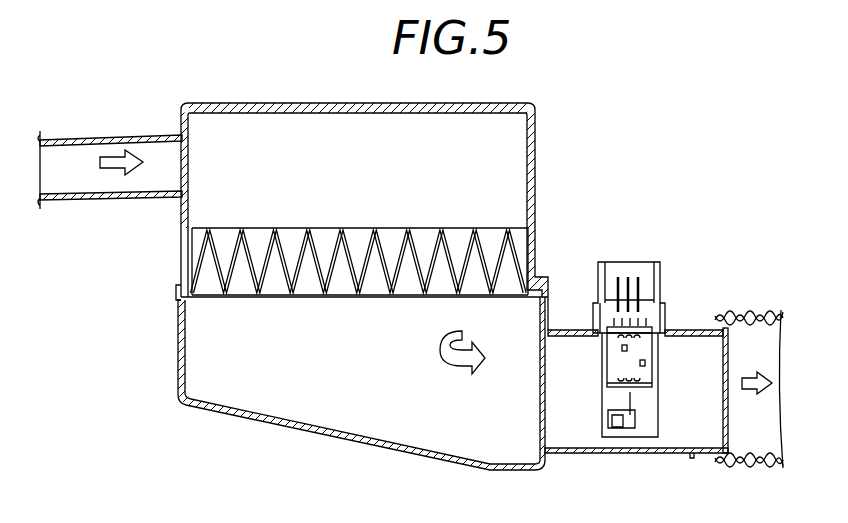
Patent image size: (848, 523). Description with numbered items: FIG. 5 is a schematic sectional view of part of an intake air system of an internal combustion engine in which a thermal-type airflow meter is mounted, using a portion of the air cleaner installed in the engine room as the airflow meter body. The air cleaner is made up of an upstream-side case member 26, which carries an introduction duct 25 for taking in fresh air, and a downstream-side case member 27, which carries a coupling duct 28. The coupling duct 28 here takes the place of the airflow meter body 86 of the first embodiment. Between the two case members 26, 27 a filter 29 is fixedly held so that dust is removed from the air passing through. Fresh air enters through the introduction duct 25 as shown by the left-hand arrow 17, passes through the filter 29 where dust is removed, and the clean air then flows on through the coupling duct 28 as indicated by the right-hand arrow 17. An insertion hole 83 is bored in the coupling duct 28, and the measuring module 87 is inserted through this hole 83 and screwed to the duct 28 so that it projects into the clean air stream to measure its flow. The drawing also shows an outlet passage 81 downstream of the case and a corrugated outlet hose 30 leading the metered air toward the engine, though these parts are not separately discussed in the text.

The arrow 17 is at (118, 157).
The introduction duct 25 is at (75, 138).
The upstream-side case member 26 is at (478, 100).
The downstream-side case member 27 is at (178, 368).
The coupling duct 28 is at (636, 483).
The airflow meter body 86 is at (648, 455).
The filter 29 is at (283, 232).
The outlet hose 30 is at (772, 312).
The duct 81 is at (636, 408).
The insertion hole 83 is at (668, 313).
The measuring module 87 is at (665, 305).